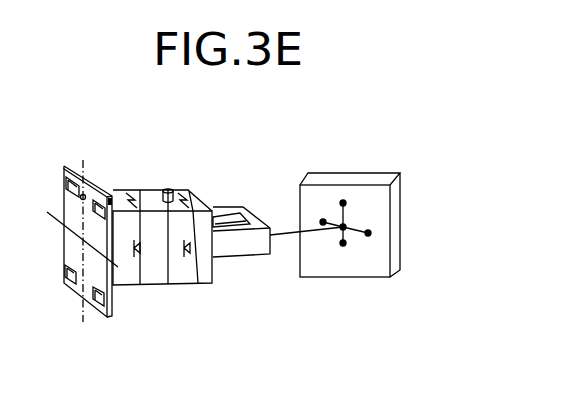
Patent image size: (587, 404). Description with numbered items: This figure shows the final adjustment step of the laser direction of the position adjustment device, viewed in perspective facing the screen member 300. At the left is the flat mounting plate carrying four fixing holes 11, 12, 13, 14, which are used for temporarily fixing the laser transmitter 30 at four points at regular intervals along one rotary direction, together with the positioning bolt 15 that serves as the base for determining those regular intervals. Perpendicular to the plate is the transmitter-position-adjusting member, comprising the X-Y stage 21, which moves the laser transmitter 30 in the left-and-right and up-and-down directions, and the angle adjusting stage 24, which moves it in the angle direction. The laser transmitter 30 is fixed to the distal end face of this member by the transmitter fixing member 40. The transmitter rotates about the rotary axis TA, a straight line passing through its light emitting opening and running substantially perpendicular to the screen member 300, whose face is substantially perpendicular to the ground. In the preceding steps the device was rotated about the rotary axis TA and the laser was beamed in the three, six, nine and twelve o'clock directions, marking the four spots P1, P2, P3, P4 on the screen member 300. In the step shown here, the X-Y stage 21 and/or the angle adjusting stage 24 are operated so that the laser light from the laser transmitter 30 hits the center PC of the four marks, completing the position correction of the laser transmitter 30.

The fixing hole 11 is at (63, 168).
The fixing hole 12 is at (91, 207).
The fixing hole 13 is at (95, 297).
The fixing hole 14 is at (67, 270).
The positioning bolt 15 is at (63, 197).
The rotary axis TA is at (83, 243).
The X-Y stage 21 is at (135, 189).
The angle adjusting stage 24 is at (183, 190).
The laser transmitter 30 is at (232, 247).
The transmitter fixing member 40 is at (223, 217).
The screen member 300 is at (360, 178).
The center point PC is at (340, 232).
The beamed spot P1 is at (368, 238).
The beamed spot P2 is at (343, 247).
The beamed spot P3 is at (321, 220).
The beamed spot P4 is at (342, 200).